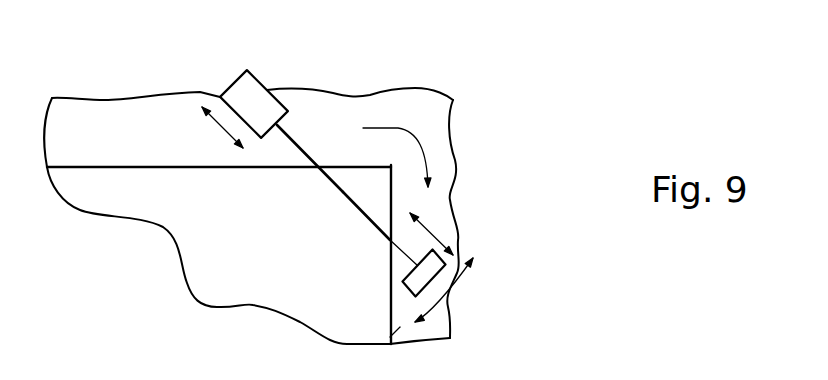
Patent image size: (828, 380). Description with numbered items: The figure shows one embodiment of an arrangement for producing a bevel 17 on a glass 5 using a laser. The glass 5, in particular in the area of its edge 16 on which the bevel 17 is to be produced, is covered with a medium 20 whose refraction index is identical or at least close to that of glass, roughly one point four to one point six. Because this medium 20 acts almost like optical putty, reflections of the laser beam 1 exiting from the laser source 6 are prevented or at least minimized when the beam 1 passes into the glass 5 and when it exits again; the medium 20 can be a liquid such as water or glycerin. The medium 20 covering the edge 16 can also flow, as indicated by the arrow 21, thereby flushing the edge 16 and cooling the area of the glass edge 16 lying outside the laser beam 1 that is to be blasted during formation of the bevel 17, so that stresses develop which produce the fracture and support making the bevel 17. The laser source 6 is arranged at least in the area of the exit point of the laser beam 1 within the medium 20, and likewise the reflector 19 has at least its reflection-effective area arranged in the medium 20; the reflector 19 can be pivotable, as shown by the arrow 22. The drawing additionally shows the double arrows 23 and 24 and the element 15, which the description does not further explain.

The laser beam 1 is at (295, 143).
The glass 5 is at (147, 193).
The laser source 6 is at (255, 108).
The bottom edge 15 is at (425, 340).
The edge 16 is at (391, 165).
The bevel 17 is at (343, 192).
The reflector 19 is at (425, 272).
The medium 20 is at (423, 207).
The arrow 21 is at (418, 138).
The arrow 22 is at (458, 287).
The movement direction 23 is at (218, 132).
The movement direction 24 is at (433, 233).